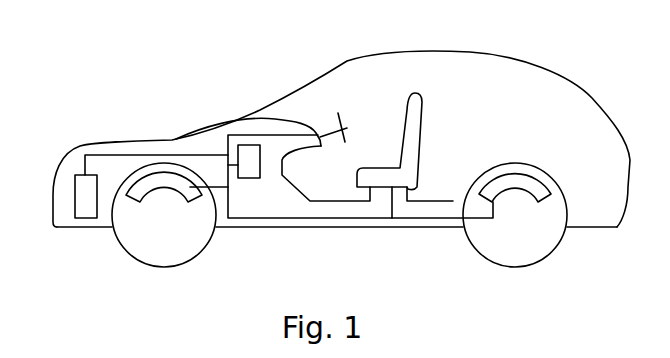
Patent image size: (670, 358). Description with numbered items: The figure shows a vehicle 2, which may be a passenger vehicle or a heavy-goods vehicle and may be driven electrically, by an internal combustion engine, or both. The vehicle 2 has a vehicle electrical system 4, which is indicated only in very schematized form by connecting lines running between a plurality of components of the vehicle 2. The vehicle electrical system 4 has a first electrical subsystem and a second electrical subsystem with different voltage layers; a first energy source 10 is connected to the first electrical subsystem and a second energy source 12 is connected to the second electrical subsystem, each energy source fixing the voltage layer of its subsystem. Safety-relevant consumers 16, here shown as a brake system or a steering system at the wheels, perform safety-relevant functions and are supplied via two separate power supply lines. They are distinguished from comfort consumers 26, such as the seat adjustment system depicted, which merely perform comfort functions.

The vehicle 2 is at (231, 99).
The vehicle electrical system 4 is at (190, 155).
The first energy source 10 is at (83, 191).
The second energy source 12 is at (251, 165).
The safety-relevant consumer 16 is at (145, 197).
The comfort consumer 26 is at (342, 117).